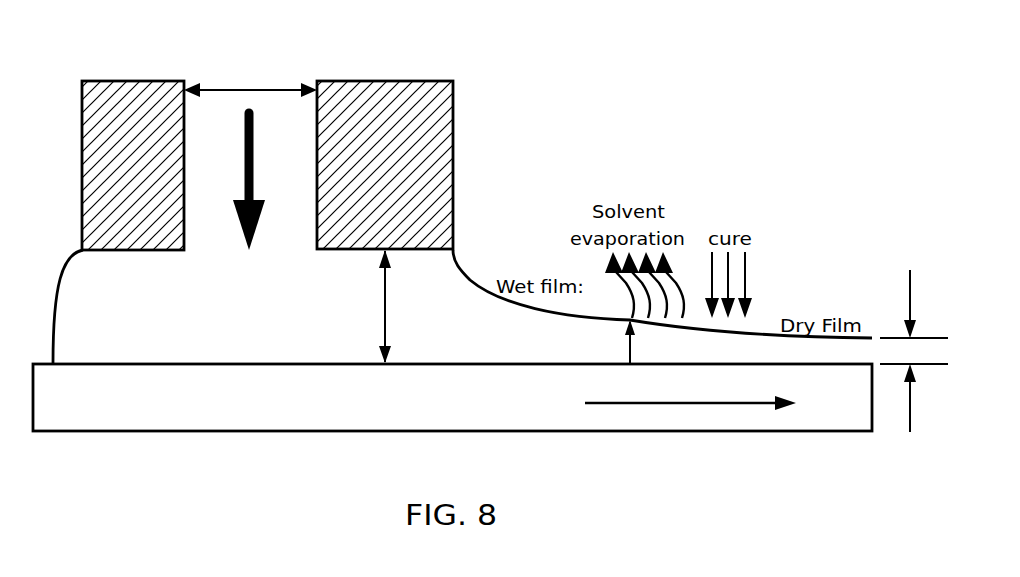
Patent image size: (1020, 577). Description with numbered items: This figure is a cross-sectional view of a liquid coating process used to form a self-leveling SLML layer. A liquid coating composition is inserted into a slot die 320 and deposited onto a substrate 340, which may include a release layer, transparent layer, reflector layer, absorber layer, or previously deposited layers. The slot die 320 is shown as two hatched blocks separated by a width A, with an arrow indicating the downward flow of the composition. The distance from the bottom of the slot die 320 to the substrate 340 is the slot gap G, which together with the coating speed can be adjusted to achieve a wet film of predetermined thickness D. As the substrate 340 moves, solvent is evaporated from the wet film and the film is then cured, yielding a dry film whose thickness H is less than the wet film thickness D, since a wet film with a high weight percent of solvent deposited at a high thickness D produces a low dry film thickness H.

The slot die 320 is at (383, 81).
The substrate 340 is at (82, 431).
The die gap width A is at (250, 79).
The slot gap G is at (392, 306).
The wet film thickness D is at (622, 341).
The dry film thickness H is at (914, 351).